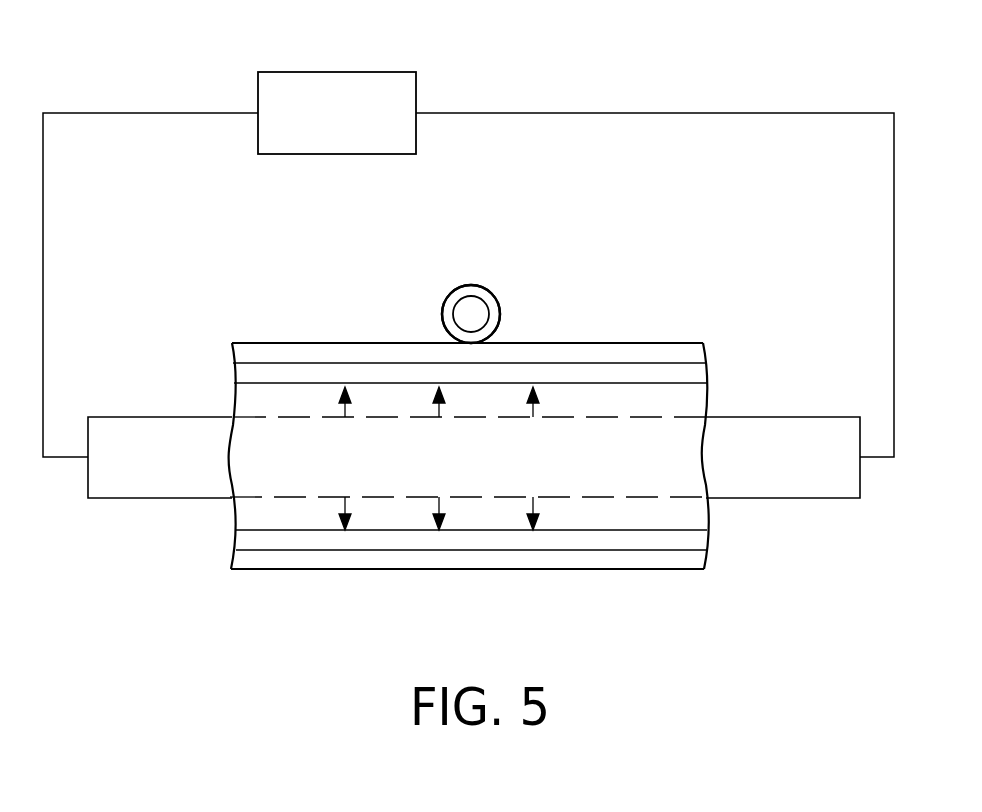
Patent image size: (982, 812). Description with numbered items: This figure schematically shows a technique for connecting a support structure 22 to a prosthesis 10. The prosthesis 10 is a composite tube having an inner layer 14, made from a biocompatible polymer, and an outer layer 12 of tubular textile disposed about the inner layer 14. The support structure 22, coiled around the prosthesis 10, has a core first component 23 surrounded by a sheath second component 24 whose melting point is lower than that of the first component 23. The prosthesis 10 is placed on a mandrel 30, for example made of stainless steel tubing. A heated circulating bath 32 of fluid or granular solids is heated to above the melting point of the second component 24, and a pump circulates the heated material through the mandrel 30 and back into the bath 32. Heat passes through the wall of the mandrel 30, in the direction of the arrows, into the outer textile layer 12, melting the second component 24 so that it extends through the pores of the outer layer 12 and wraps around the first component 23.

The prosthesis 10 is at (517, 423).
The outer layer 12 is at (647, 354).
The inner layer 14 is at (690, 372).
The support structure 22 is at (503, 282).
The first component 23 is at (468, 313).
The second component 24 is at (474, 290).
The mandrel 30 is at (778, 456).
The heated circulating bath 32 is at (350, 98).